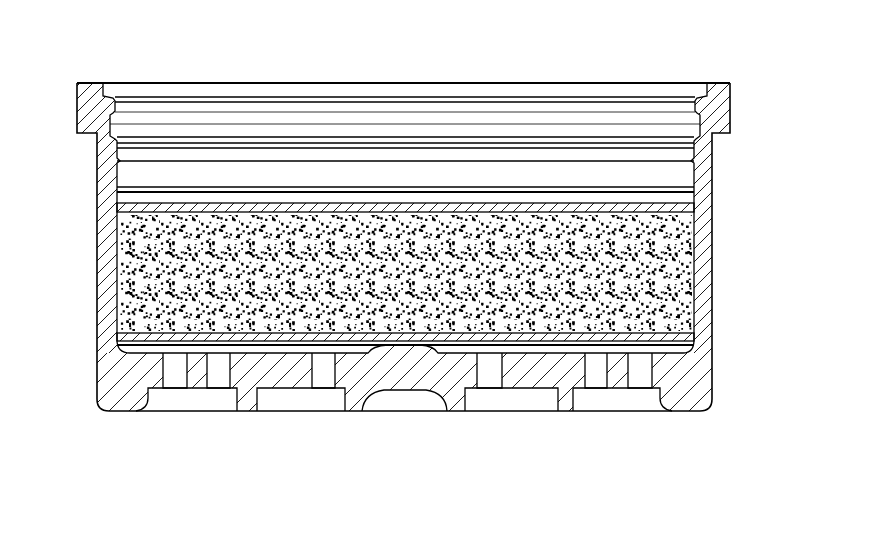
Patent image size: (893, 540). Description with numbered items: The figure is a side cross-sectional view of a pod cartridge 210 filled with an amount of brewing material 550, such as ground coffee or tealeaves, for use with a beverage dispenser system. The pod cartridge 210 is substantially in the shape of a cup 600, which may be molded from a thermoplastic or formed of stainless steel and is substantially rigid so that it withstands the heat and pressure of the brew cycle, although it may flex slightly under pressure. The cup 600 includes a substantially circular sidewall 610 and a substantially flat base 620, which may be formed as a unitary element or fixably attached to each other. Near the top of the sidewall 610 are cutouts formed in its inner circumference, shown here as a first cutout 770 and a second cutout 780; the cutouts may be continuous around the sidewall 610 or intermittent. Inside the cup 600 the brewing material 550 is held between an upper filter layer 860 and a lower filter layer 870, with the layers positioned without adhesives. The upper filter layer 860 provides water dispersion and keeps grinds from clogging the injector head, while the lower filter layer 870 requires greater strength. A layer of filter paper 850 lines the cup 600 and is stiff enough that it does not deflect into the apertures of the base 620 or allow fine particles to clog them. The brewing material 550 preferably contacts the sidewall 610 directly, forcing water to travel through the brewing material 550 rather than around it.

The pod cartridge 210 is at (128, 49).
The cup 600 is at (713, 170).
The sidewall 610 is at (712, 212).
The base 620 is at (687, 410).
The first cutout 770 is at (113, 113).
The second cutout 780 is at (115, 148).
The filter paper 850 is at (547, 194).
The upper filter layer 860 is at (452, 203).
The brewing material 550 is at (640, 262).
The lower filter layer 870 is at (672, 330).